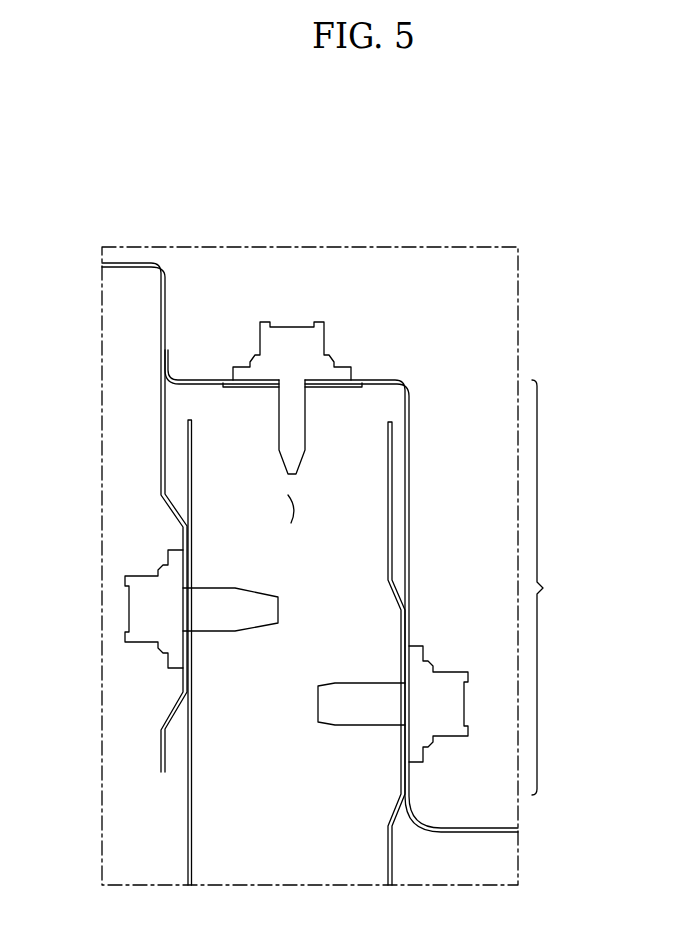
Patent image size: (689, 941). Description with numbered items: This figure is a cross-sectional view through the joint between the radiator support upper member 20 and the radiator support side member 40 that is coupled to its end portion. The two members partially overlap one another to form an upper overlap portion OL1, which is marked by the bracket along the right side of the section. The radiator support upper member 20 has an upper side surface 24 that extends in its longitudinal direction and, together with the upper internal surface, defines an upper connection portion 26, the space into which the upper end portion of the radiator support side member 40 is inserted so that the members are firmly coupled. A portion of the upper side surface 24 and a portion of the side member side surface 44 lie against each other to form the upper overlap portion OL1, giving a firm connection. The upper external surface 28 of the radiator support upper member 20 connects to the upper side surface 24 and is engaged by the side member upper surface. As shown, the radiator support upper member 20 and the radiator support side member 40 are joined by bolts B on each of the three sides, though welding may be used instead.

The radiator support upper member 20 is at (414, 372).
The upper side surface 24 is at (162, 437).
The upper connection portion 26 is at (288, 511).
The upper external surface 28 is at (376, 383).
The radiator support side member 40 is at (160, 850).
The side member side surface 44 is at (187, 827).
The bolt B is at (293, 338).
The upper overlap portion OL1 is at (552, 587).